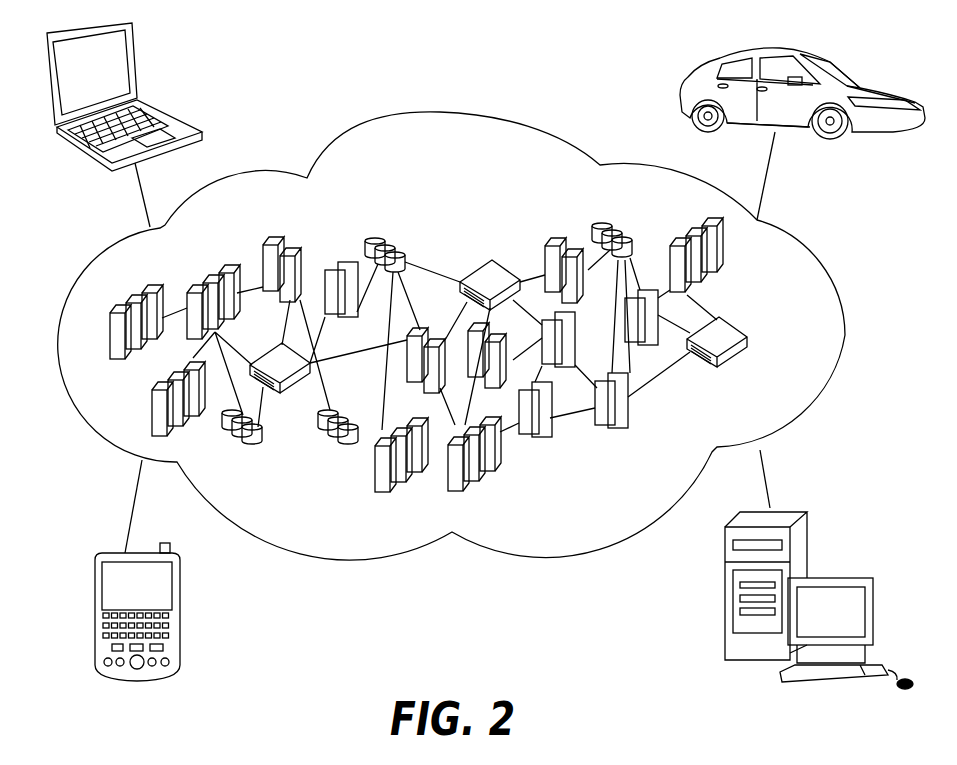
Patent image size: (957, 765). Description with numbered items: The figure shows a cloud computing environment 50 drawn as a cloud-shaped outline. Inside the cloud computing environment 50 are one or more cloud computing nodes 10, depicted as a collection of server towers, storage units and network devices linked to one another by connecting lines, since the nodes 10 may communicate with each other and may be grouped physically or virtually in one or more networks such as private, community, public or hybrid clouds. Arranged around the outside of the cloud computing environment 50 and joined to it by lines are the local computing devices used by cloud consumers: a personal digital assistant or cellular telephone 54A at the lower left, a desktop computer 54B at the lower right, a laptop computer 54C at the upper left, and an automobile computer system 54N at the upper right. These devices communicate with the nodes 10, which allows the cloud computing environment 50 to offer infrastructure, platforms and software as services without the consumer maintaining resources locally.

The cloud computing nodes 10 is at (362, 185).
The cloud computing environment 50 is at (455, 120).
The personal digital assistant (PDA) or cellular telephone 54A is at (167, 583).
The desktop computer 54B is at (847, 582).
The laptop computer 54C is at (127, 75).
The automobile computer system 54N is at (690, 83).